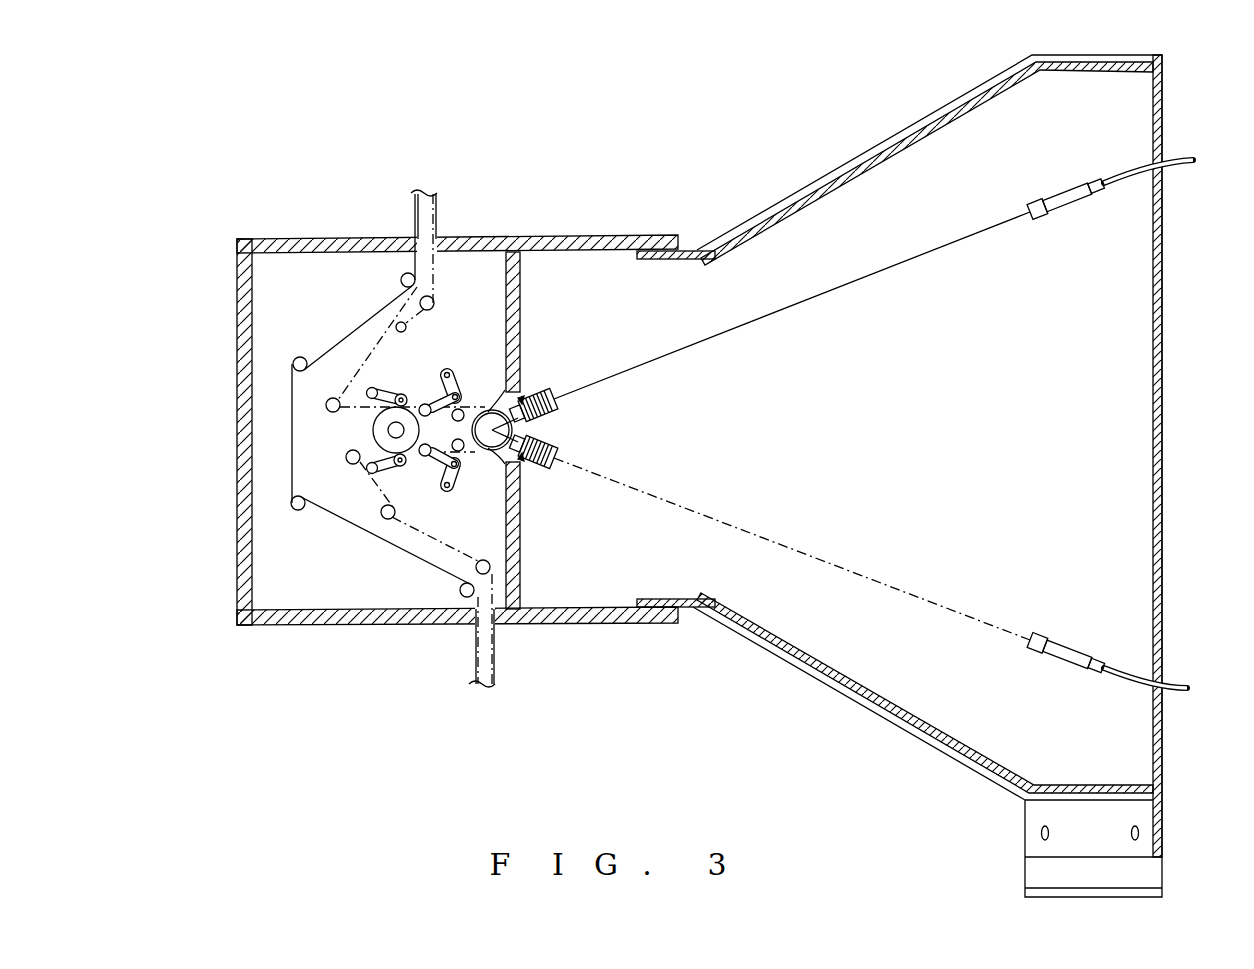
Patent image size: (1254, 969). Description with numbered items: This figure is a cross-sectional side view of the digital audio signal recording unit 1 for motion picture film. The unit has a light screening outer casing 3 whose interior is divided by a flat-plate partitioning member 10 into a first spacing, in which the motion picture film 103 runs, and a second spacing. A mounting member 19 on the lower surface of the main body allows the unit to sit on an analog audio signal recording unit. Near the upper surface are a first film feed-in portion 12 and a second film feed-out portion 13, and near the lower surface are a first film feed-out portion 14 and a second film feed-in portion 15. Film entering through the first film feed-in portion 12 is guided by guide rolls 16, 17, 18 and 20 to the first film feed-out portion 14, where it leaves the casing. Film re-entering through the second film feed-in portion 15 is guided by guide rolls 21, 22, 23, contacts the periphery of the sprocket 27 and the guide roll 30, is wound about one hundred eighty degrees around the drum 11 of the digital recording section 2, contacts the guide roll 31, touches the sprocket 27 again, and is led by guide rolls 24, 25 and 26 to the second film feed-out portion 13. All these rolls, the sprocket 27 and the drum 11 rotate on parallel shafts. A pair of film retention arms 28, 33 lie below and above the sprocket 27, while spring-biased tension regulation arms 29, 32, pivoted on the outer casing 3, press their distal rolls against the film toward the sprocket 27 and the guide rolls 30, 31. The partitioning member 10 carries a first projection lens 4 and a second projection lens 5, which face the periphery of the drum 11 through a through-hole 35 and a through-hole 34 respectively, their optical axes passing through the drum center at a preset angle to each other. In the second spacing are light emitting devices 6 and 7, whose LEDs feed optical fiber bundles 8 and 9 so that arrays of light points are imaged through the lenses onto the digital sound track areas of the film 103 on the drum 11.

The digital audio signal recording unit 1 is at (934, 100).
The digital recording section 2 is at (590, 329).
The outer casing 3 is at (887, 703).
The first projection lens 4 is at (563, 407).
The second projection lens 5 is at (560, 445).
The light emitting device 6 is at (1062, 206).
The light emitting device 7 is at (1057, 647).
The optical fiber bundle 8 is at (1183, 167).
The optical fiber bundle 9 is at (1180, 682).
The partitioning member 10 is at (521, 556).
The drum 11 is at (496, 409).
The first film feed-in portion 12 is at (395, 269).
The second film feed-out portion 13 is at (442, 259).
The first film feed-out portion 14 is at (452, 596).
The second film feed-in portion 15 is at (512, 594).
The guide roll 16 is at (362, 296).
The guide roll 17 is at (293, 363).
The guide roll 18 is at (291, 501).
The mounting member 19 is at (236, 619).
The guide roll 20 is at (466, 598).
The guide roll 21 is at (489, 562).
The guide roll 22 is at (381, 512).
The guide roll 23 is at (348, 461).
The guide roll 24 is at (333, 398).
The guide roll 25 is at (407, 328).
The guide roll 26 is at (435, 303).
The sprocket 27 is at (396, 431).
The film retention arm 28 is at (380, 467).
The tension regulation arm 29 is at (446, 491).
The guide roll 30 is at (460, 452).
The guide roll 31 is at (459, 409).
The tension regulation arm 32 is at (440, 386).
The film retention arm 33 is at (380, 389).
The through-hole 34 is at (523, 457).
The through-hole 35 is at (523, 400).
The motion picture film 103 is at (495, 655).